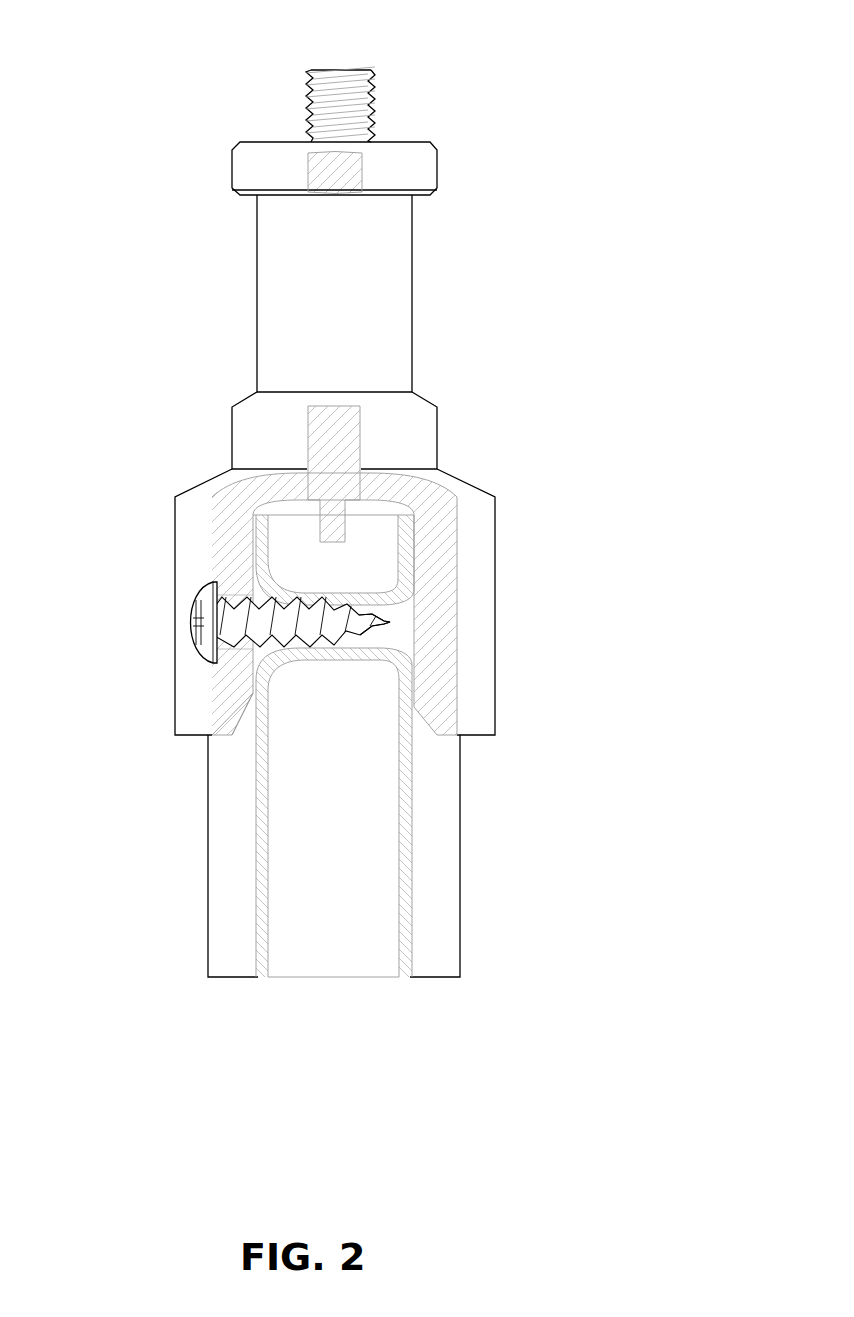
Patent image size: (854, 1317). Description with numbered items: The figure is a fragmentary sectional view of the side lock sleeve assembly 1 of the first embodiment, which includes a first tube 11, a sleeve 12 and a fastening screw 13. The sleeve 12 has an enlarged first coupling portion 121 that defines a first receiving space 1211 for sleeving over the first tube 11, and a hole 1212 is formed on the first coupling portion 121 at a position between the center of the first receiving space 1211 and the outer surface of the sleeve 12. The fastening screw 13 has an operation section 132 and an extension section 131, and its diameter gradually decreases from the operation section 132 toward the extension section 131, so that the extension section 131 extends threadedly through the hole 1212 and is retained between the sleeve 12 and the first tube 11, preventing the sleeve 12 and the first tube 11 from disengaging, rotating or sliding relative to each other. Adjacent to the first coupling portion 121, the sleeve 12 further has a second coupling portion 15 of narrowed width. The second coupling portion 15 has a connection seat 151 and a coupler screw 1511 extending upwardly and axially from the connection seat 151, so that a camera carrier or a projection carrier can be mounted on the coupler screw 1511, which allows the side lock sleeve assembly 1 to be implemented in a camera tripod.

The side lock sleeve assembly 1 is at (153, 72).
The first tube 11 is at (408, 538).
The sleeve 12 is at (225, 380).
The first coupling portion 121 is at (197, 500).
The first receiving space 1211 is at (423, 715).
The hole 1212 is at (210, 582).
The fastening screw 13 is at (155, 592).
The extension section 131 is at (385, 622).
The operation section 132 is at (212, 628).
The second coupling portion 15 is at (430, 178).
The connection seat 151 is at (403, 147).
The coupler screw 1511 is at (363, 80).